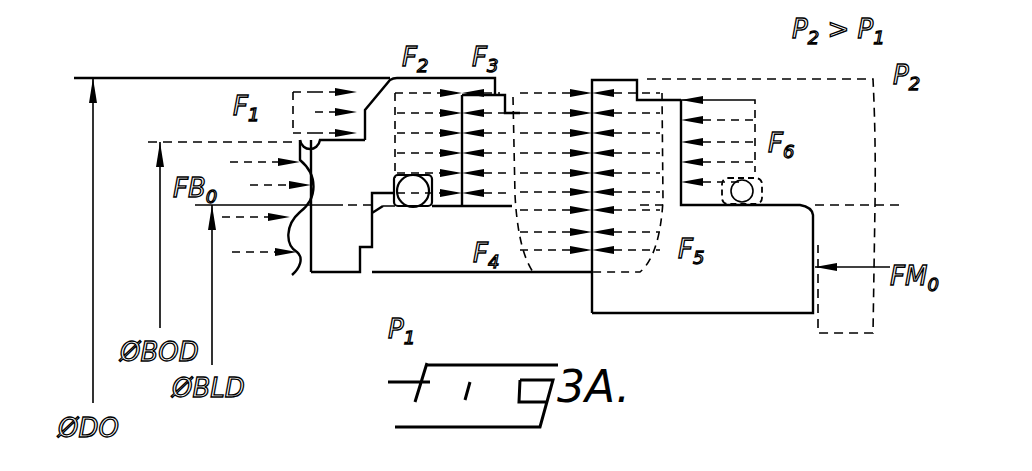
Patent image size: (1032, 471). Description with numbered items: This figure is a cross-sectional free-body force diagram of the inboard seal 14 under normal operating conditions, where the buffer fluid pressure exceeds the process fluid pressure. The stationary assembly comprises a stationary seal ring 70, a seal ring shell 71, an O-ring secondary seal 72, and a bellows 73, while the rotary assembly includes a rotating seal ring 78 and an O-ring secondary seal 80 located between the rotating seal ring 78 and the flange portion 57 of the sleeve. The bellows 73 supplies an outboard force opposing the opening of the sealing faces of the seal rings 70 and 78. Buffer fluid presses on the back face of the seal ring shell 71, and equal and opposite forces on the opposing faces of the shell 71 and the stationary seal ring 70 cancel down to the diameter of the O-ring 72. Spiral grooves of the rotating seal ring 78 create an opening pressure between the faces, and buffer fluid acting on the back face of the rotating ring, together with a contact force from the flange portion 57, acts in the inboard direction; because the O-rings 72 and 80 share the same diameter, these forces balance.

The inboard seal 14 is at (597, 56).
The flange portion 57 is at (777, 79).
The stationary seal ring 70 is at (443, 258).
The seal ring shell 71 is at (381, 98).
The O-ring secondary seal 72 is at (414, 200).
The bellows 73 is at (296, 268).
The rotating seal ring 78 is at (740, 303).
The O-ring secondary seal 80 is at (760, 190).